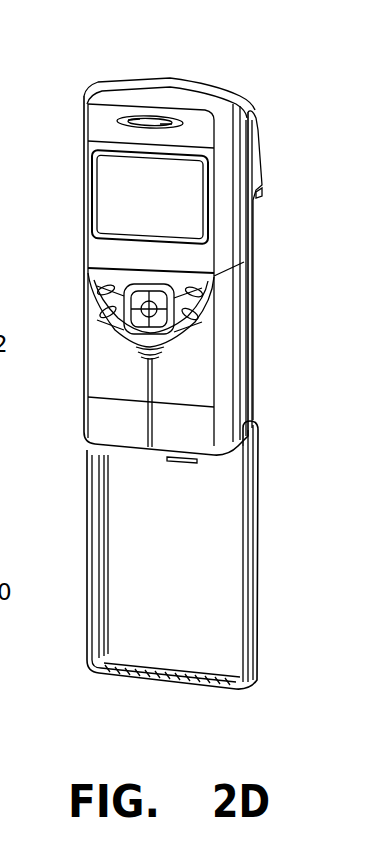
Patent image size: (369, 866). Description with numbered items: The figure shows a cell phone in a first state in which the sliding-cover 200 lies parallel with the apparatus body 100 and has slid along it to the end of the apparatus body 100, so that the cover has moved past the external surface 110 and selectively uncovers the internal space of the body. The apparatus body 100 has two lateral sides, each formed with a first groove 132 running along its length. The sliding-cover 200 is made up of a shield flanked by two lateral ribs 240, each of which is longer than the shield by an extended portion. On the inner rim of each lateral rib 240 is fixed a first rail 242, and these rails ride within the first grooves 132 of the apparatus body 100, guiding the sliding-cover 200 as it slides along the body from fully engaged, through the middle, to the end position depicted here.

The apparatus body 100 is at (174, 82).
The external surface 110 is at (145, 198).
The first groove 132 is at (297, 293).
The sliding-cover 200 is at (250, 686).
The lateral rib 240 is at (295, 553).
The first rail 242 is at (102, 550).